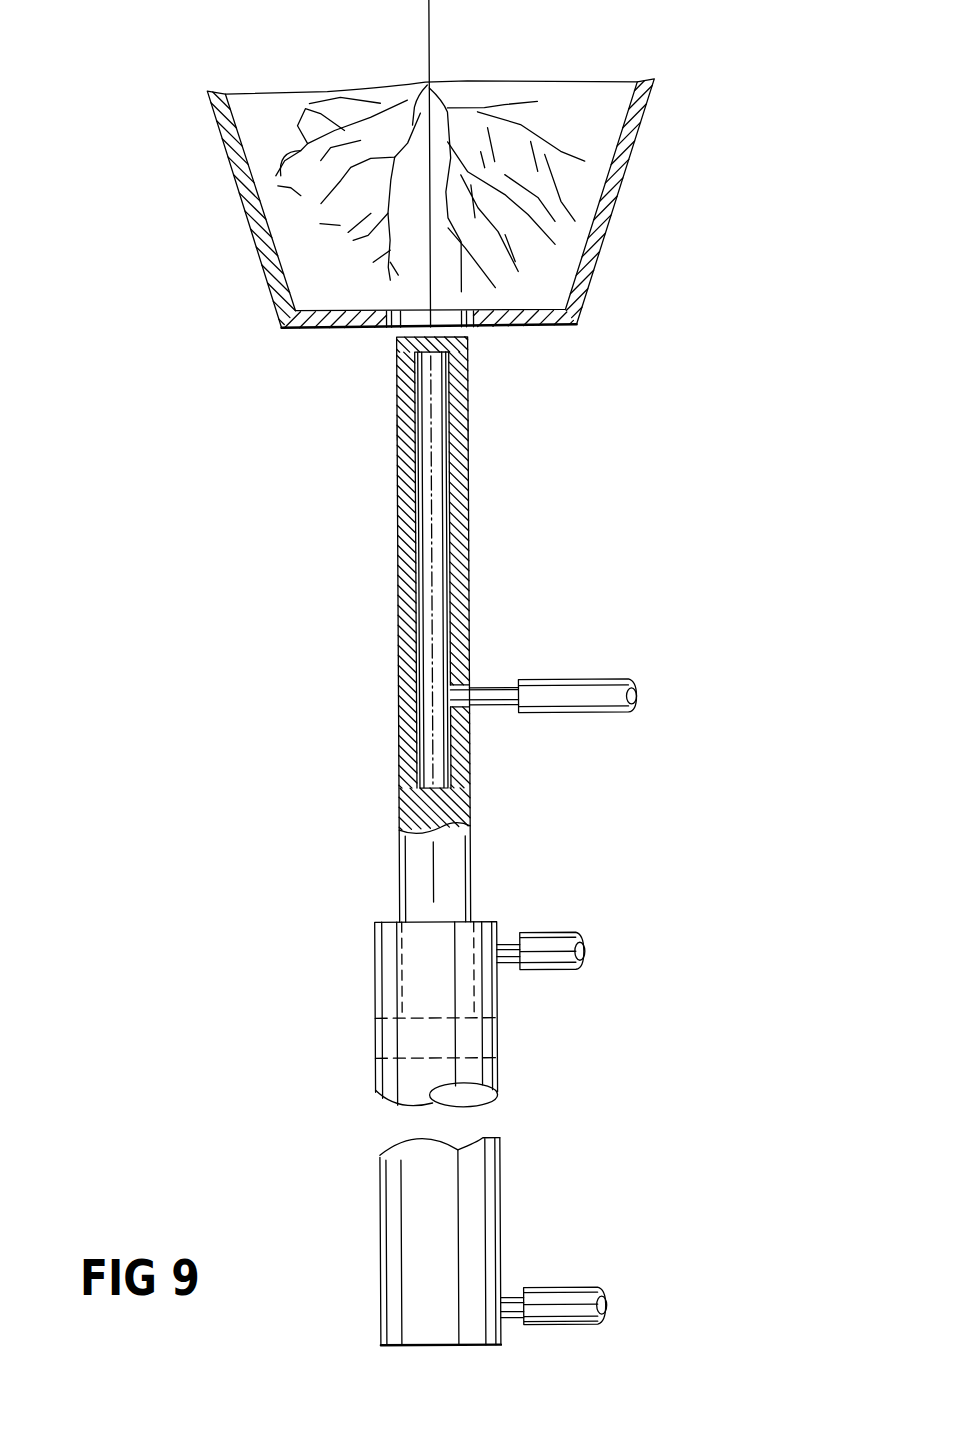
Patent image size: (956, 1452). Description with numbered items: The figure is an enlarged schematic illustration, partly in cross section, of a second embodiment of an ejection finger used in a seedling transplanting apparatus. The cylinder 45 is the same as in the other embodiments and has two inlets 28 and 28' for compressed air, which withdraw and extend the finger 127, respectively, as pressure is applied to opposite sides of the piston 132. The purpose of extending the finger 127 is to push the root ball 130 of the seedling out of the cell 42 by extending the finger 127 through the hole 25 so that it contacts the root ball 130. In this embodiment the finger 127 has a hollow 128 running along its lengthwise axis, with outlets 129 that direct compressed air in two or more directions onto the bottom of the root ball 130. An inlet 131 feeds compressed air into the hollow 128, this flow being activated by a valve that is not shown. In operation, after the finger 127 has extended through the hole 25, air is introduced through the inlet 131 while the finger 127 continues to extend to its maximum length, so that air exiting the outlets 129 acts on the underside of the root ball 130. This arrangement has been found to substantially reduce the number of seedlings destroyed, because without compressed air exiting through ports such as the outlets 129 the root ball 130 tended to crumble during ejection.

The root ball 130 is at (477, 97).
The cell 42 is at (603, 210).
The hole 25 is at (417, 322).
The outlets 129 is at (405, 368).
The finger 127 is at (458, 555).
The hollow 128 is at (442, 612).
The inlet 131 is at (492, 693).
The piston 132 is at (485, 1038).
The inlet 28' is at (547, 926).
The cylinder 45 is at (485, 1185).
The inlet 28 is at (553, 1286).